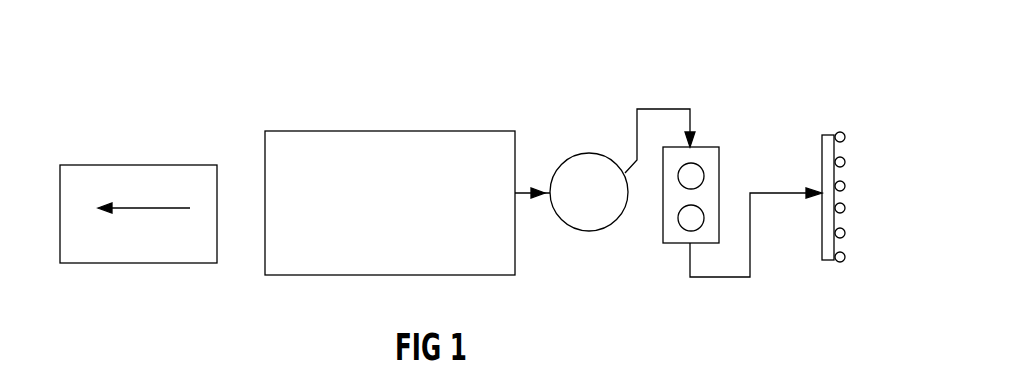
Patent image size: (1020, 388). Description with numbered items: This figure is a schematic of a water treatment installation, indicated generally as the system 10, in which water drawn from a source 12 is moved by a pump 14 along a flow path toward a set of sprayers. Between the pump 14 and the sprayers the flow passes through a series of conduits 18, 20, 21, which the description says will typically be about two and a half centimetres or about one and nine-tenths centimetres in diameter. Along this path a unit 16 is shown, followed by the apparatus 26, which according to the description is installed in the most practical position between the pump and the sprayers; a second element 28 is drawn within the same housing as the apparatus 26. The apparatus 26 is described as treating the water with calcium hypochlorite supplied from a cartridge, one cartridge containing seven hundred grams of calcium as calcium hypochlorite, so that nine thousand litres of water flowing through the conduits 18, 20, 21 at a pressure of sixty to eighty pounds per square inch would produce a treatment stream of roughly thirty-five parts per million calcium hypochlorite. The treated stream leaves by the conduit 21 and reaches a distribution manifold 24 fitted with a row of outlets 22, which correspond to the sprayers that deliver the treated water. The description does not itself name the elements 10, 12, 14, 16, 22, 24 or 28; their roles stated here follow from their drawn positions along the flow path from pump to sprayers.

The printing system 10 is at (533, 84).
The substrate / media 12 is at (133, 146).
The host / controller 14 is at (370, 147).
The processor / image processing unit 16 is at (582, 172).
The conduit 18 is at (530, 198).
The conduit 20 is at (660, 108).
The conduit 21 is at (727, 275).
The nozzles 22 is at (845, 139).
The printhead 24 is at (828, 148).
The apparatus 26 is at (690, 174).
The second storage / component 28 is at (680, 217).